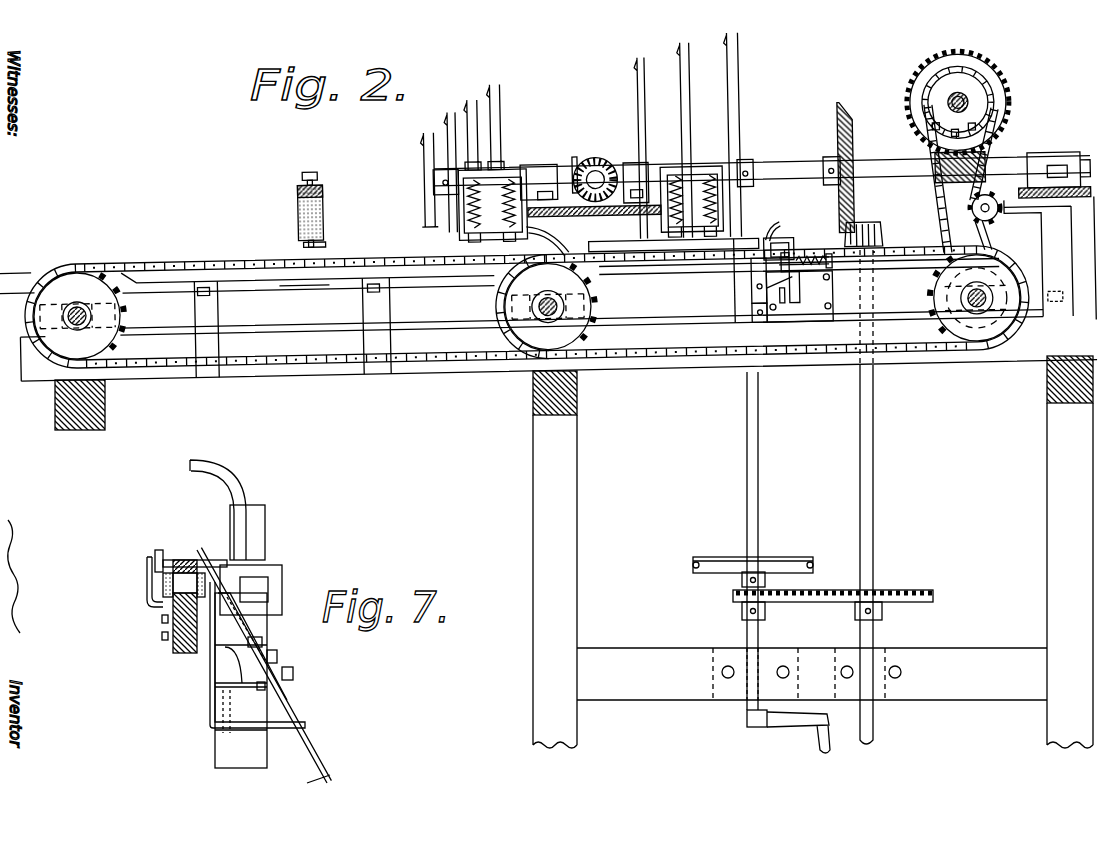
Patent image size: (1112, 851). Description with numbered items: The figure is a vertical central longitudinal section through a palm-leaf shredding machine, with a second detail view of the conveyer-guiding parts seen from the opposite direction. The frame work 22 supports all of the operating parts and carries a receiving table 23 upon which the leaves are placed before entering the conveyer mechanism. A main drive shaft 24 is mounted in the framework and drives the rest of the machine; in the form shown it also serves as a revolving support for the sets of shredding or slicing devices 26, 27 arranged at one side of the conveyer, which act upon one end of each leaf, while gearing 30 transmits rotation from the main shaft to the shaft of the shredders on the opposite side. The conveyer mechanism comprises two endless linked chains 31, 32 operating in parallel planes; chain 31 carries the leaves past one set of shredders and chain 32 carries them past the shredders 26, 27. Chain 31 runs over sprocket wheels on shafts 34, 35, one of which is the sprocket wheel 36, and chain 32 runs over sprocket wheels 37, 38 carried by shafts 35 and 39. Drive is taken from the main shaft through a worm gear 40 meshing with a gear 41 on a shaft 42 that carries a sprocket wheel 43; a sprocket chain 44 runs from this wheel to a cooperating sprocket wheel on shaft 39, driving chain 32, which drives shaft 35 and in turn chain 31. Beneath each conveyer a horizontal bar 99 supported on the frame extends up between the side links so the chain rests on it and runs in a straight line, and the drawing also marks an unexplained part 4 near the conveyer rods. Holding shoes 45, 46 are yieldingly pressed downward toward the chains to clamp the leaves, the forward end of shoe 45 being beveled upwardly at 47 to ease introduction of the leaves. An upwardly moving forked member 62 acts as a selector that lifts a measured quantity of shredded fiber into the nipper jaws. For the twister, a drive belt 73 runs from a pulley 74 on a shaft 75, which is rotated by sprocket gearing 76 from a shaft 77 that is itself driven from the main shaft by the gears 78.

In FIG. 2, the rod 4 is at (486, 302).
In FIG. 2, the frame work 22 is at (105, 428).
In FIG. 2, the receiving table 23 is at (25, 272).
In FIG. 2, the main drive shaft 24 is at (1024, 178).
In FIG. 2, the shredding or slicing devices 26 is at (455, 156).
In FIG. 2, the shredding or slicing devices 27 is at (717, 121).
In FIG. 2, the gearing 30 is at (592, 176).
In FIG. 2, the endless linked chain 31 is at (275, 371).
In FIG. 2, the endless linked chain 32 is at (727, 368).
In FIG. 7, the endless linked chain 32 is at (147, 592).
In FIG. 2, the shaft 34 is at (78, 326).
In FIG. 2, the shaft 35 is at (568, 310).
In FIG. 2, the sprocket wheel 36 is at (80, 280).
In FIG. 2, the sprocket wheel 37 is at (530, 344).
In FIG. 2, the sprocket wheel 38 is at (930, 340).
In FIG. 2, the shaft 39 is at (985, 321).
In FIG. 2, the worm gear 40 is at (953, 204).
In FIG. 2, the gear 41 is at (1001, 90).
In FIG. 2, the shaft 42 is at (957, 102).
In FIG. 2, the sprocket wheel 43 is at (958, 100).
In FIG. 2, the sprocket chain 44 is at (931, 242).
In FIG. 2, the holding shoe 45 is at (367, 262).
In FIG. 7, the holding shoe 45 is at (170, 560).
In FIG. 2, the holding shoe 46 is at (610, 262).
In FIG. 2, the beveled forward end 47 is at (280, 251).
In FIG. 7, the forked member 62 is at (204, 549).
In FIG. 2, the drive belt 73 is at (816, 562).
In FIG. 2, the pulley 74 is at (793, 557).
In FIG. 2, the shaft 75 is at (755, 452).
In FIG. 2, the sprocket gearing 76 is at (840, 592).
In FIG. 2, the shaft 77 is at (884, 540).
In FIG. 2, the gears 78 is at (876, 246).
In FIG. 2, the horizontal bar 99 is at (302, 279).
In FIG. 7, the horizontal bar 99 is at (190, 655).